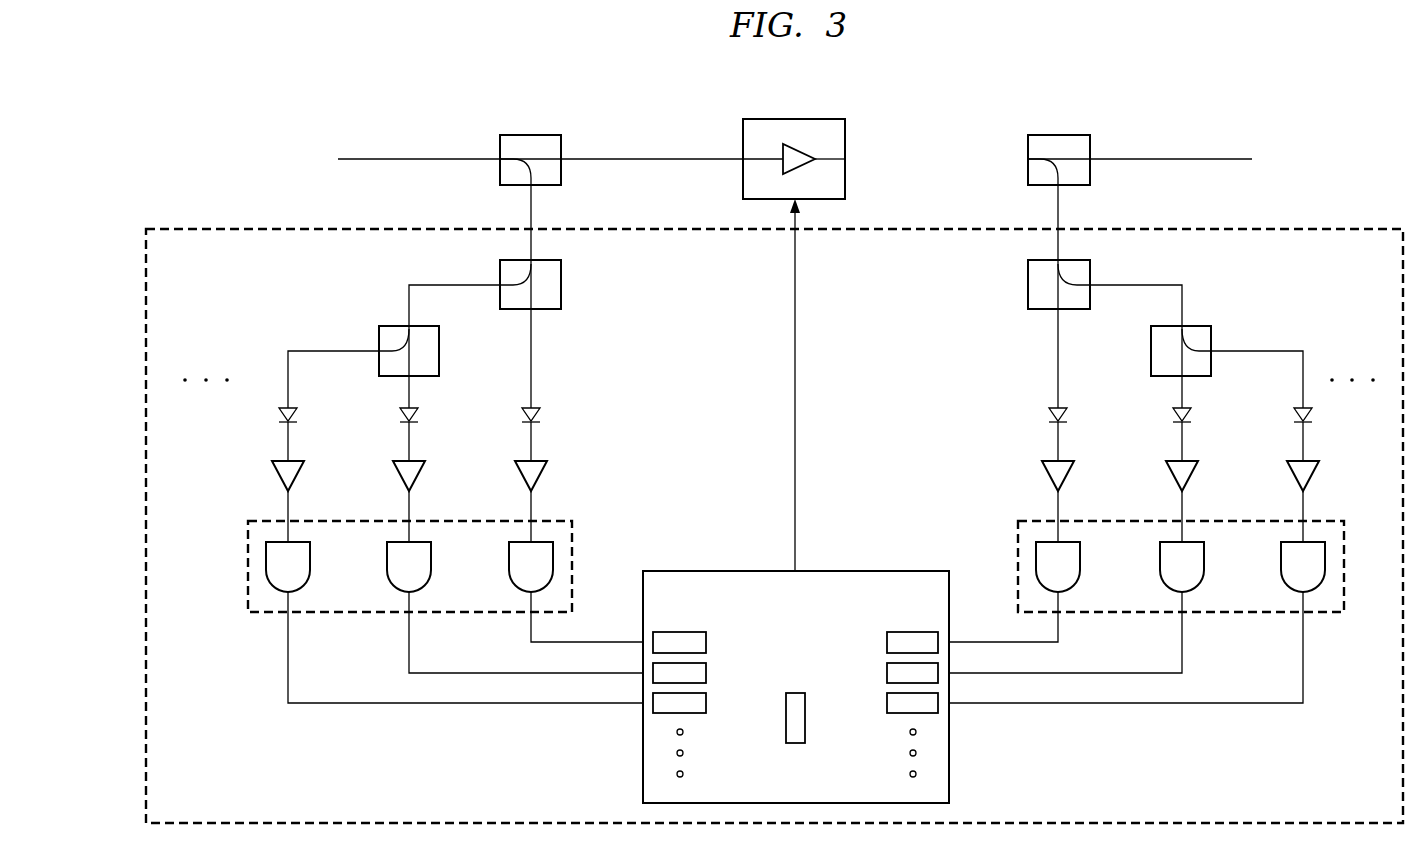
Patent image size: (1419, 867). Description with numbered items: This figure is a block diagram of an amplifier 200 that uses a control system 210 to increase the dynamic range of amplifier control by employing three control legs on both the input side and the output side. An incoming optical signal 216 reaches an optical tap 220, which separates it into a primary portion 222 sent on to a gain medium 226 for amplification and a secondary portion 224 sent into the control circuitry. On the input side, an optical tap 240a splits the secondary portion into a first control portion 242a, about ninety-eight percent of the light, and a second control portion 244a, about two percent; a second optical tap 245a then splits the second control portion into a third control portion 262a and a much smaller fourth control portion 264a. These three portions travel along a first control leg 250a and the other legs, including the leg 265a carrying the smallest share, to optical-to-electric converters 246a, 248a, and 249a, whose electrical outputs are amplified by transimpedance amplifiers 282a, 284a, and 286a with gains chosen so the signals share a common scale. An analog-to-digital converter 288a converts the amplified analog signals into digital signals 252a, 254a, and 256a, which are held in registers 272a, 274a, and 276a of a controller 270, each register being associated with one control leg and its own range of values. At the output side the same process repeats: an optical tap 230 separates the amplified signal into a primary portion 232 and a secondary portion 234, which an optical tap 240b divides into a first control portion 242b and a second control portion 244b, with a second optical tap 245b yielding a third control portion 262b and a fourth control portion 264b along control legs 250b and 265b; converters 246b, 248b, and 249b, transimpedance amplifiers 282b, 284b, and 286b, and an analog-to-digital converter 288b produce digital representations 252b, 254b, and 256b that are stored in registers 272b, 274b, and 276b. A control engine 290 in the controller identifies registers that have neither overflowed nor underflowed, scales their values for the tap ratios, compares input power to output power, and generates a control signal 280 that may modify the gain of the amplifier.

The amplifier 200 is at (897, 114).
The control system 210 is at (1290, 228).
The optical signal 216 is at (415, 158).
The optical tap 220 is at (530, 134).
The primary portion 222 is at (650, 158).
The secondary portion 224 is at (530, 215).
The gain medium 226 is at (795, 118).
The optical tap 230 is at (1059, 134).
The primary portion 232 is at (1178, 158).
The secondary portion 234 is at (1059, 215).
The optical tap 240a is at (562, 284).
The optical tap 240b is at (1028, 284).
The first control portion 242a is at (532, 370).
The first control portion 242b is at (1057, 370).
The second control portion 244a is at (409, 309).
The second control portion 244b is at (1183, 309).
The second optical tap 245a is at (440, 352).
The second optical tap 245b is at (1150, 352).
The optical-to-electric converter 246a is at (536, 420).
The optical-to-electric converter 246b is at (1054, 420).
The optical-to-electric converter 248a is at (404, 420).
The optical-to-electric converter 248b is at (1187, 420).
The optical-to-electric converter 249a is at (282, 420).
The optical-to-electric converter 249b is at (1308, 420).
The control leg 250a is at (634, 397).
The control leg 250b is at (959, 397).
The digital signal 252a is at (592, 640).
The digital representation 252b is at (998, 640).
The digital signal 254a is at (480, 672).
The digital representation 254b is at (1110, 672).
The digital signal 256a is at (480, 704).
The digital representation 256b is at (1110, 704).
The third control portion 262a is at (411, 392).
The third control portion 262b is at (1181, 392).
The fourth control portion 264a is at (300, 351).
The fourth control portion 264b is at (1290, 351).
The control leg 265a is at (243, 642).
The control leg 265b is at (1346, 642).
The controller 270 is at (857, 570).
The register 272a is at (679, 631).
The register 272b is at (912, 631).
The register 274a is at (707, 672).
The register 274b is at (886, 672).
The register 276a is at (707, 705).
The register 276b is at (886, 705).
The control signal 280 is at (797, 425).
The transimpedance amplifier 282a is at (539, 478).
The transimpedance amplifier 282b is at (1050, 478).
The transimpedance amplifier 284a is at (401, 478).
The transimpedance amplifier 284b is at (1190, 478).
The transimpedance amplifier 286a is at (280, 478).
The transimpedance amplifier 286b is at (1312, 478).
The analog-to-digital converter 288a is at (248, 565).
The analog-to-digital converter 288b is at (1018, 545).
The control engine 290 is at (796, 744).